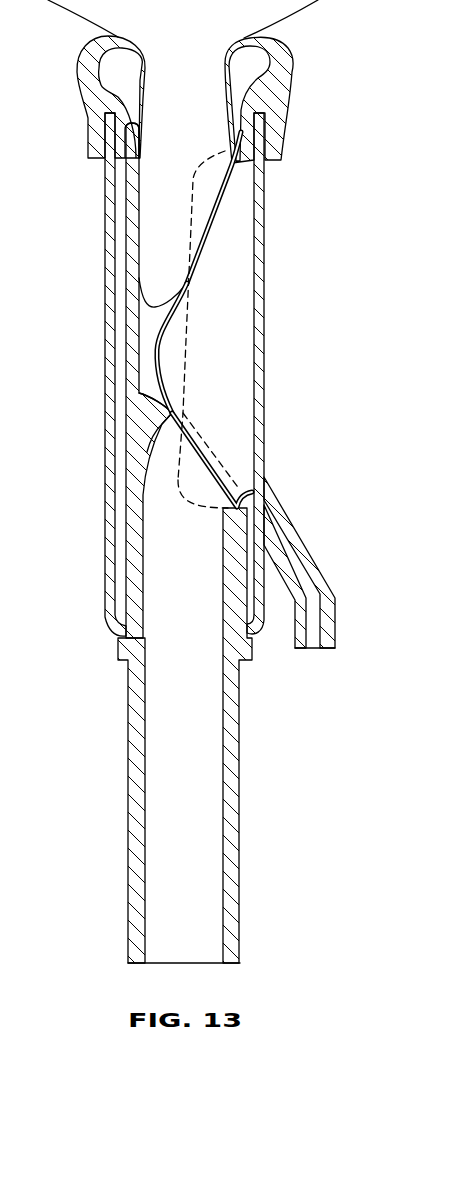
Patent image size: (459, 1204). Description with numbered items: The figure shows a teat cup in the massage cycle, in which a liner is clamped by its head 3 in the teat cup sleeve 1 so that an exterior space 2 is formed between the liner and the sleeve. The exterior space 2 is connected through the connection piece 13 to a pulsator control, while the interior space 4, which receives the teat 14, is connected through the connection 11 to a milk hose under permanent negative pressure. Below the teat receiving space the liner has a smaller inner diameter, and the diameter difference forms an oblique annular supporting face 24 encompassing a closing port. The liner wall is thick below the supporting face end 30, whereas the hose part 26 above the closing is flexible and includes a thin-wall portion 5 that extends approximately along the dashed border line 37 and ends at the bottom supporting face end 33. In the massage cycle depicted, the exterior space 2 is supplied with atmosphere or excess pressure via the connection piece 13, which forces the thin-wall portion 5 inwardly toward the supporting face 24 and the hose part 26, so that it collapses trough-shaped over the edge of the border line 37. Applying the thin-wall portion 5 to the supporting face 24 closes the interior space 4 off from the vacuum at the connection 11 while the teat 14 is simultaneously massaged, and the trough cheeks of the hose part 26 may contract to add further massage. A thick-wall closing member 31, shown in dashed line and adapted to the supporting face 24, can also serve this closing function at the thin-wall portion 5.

The teat cup sleeve 1 is at (264, 268).
The exterior space 2 is at (240, 192).
The head 3 is at (293, 67).
The interior space 4 is at (150, 322).
The thin-wall portion 5 is at (168, 333).
The connection 11 is at (195, 748).
The connection piece 13 is at (323, 575).
The teat 14 is at (192, 132).
The supporting face 24 is at (198, 482).
The hose part 26 is at (124, 350).
The supporting face end 30 is at (153, 413).
The closing member 31 is at (200, 443).
The bottom supporting face end 33 is at (264, 474).
The border line 37 is at (185, 377).